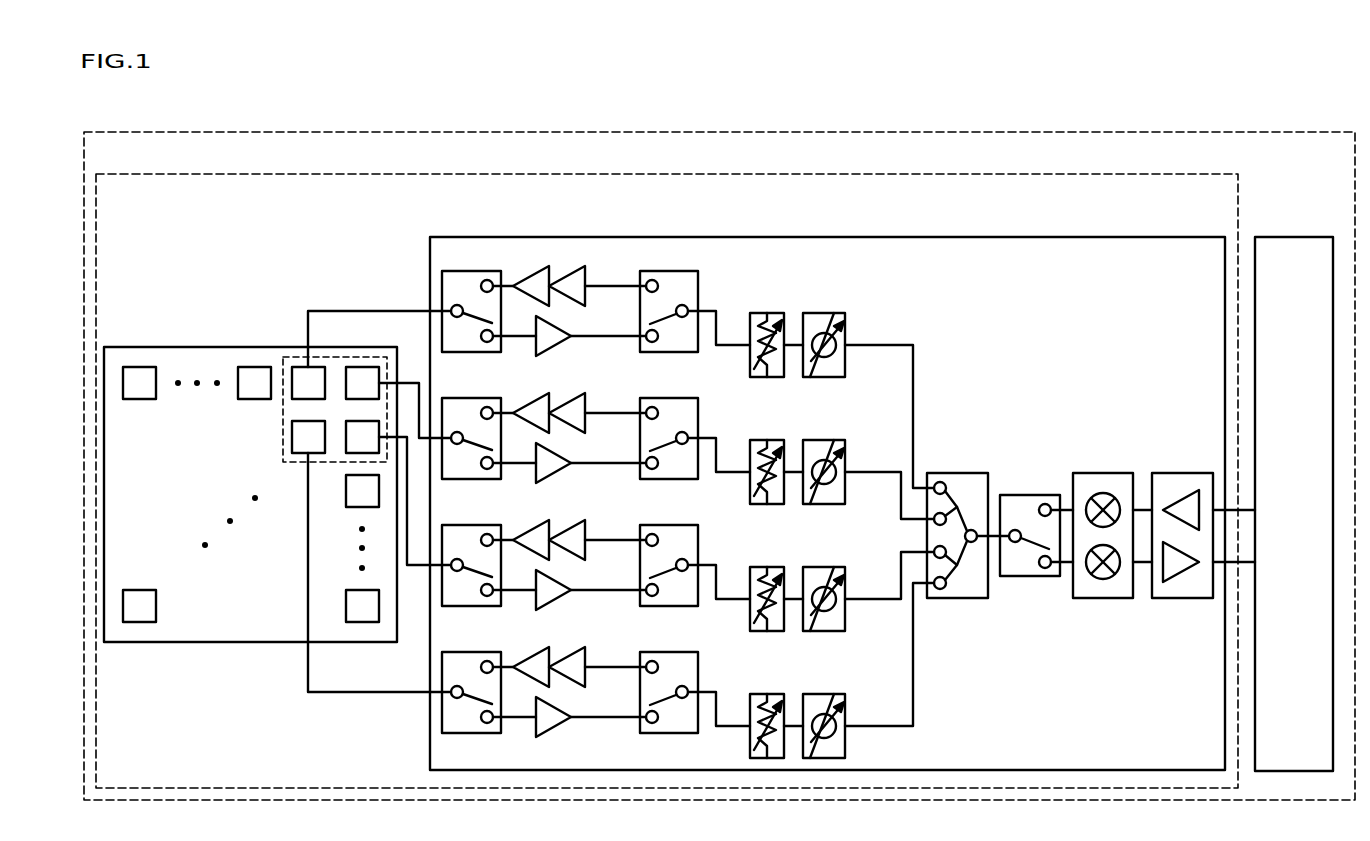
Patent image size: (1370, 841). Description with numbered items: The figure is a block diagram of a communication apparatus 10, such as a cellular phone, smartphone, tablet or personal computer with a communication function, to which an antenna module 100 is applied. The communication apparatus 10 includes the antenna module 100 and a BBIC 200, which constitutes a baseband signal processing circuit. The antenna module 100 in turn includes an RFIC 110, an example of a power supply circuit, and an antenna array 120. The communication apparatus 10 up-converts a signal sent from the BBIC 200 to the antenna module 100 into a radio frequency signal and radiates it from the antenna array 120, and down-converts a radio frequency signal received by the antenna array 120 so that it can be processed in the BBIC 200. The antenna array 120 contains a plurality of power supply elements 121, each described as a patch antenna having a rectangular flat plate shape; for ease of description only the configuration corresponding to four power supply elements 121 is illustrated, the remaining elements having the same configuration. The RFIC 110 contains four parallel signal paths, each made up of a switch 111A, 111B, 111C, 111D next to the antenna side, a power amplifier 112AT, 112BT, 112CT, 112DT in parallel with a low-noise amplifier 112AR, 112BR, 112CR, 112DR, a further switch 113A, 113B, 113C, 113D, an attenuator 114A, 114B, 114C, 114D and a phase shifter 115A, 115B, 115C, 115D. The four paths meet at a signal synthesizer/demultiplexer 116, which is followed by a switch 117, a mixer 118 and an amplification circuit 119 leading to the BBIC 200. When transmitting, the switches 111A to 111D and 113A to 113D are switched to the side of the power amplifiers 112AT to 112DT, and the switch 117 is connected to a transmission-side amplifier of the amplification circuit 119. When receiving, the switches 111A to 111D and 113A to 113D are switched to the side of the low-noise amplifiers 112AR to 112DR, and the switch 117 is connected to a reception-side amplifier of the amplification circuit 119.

The communication apparatus 10 is at (1297, 132).
The antenna module 100 is at (1130, 174).
The RFIC 110 is at (1173, 238).
The antenna array 120 is at (139, 347).
The power supply element 121 is at (358, 375).
The BBIC 200 is at (1293, 238).
The switch 111A is at (468, 271).
The switch 111B is at (468, 398).
The switch 111C is at (468, 525).
The switch 111D is at (468, 652).
The power amplifier 112AT is at (574, 272).
The power amplifier 112BT is at (574, 399).
The power amplifier 112CT is at (574, 526).
The power amplifier 112DT is at (574, 653).
The low-noise amplifier 112AR is at (556, 348).
The low-noise amplifier 112BR is at (556, 475).
The low-noise amplifier 112CR is at (556, 602).
The low-noise amplifier 112DR is at (556, 729).
The switch 113A is at (668, 271).
The switch 113B is at (668, 398).
The switch 113C is at (668, 525).
The switch 113D is at (668, 652).
The attenuator 114A is at (770, 311).
The attenuator 114B is at (770, 438).
The attenuator 114C is at (770, 565).
The attenuator 114D is at (770, 692).
The phase shifter 115A is at (824, 313).
The phase shifter 115B is at (824, 440).
The phase shifter 115C is at (824, 567).
The phase shifter 115D is at (824, 694).
The signal synthesizer/demultiplexer 116 is at (960, 473).
The switch 117 is at (1030, 495).
The mixer 118 is at (1105, 473).
The amplification circuit 119 is at (1181, 473).